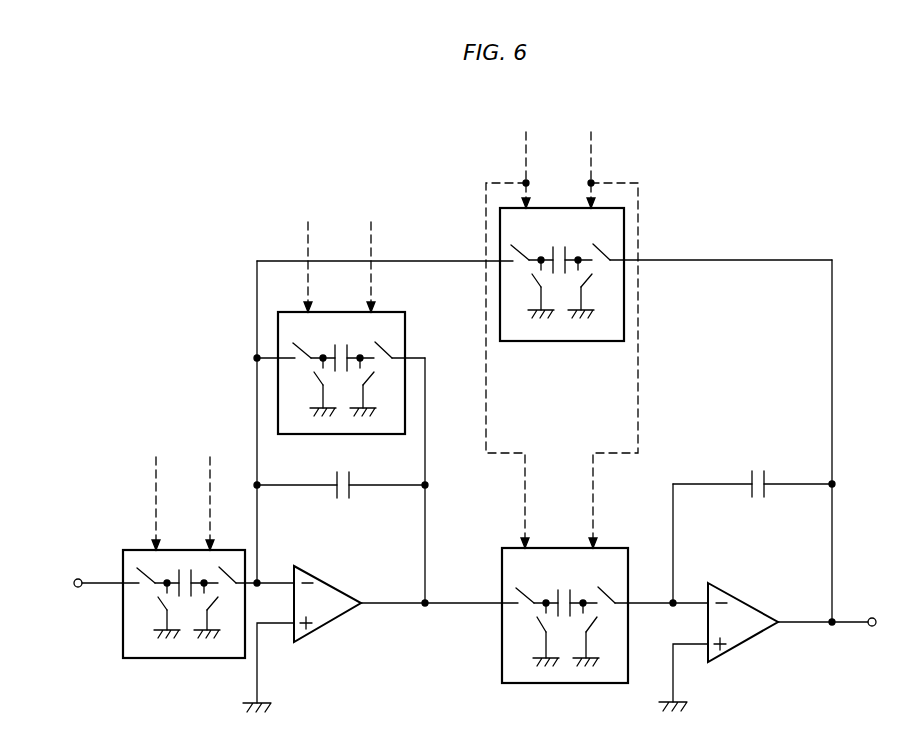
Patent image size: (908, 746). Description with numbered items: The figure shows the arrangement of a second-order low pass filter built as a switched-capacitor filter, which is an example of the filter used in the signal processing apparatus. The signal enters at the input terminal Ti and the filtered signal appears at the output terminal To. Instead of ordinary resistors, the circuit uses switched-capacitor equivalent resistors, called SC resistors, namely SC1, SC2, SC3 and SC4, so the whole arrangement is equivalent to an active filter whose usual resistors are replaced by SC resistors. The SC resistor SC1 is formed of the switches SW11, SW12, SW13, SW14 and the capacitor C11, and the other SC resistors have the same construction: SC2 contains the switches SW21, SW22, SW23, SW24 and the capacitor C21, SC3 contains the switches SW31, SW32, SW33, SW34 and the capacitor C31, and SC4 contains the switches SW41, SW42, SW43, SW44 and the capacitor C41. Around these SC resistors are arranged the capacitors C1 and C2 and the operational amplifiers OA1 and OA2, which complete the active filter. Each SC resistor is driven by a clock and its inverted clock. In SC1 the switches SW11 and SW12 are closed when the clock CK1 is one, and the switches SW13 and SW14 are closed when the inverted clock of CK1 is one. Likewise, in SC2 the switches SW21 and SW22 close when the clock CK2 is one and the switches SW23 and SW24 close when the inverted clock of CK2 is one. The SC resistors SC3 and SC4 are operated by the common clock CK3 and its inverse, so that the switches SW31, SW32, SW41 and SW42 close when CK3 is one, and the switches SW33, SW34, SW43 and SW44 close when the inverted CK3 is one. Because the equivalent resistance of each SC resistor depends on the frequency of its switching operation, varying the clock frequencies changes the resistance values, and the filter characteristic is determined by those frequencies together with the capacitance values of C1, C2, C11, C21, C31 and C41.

The input terminal Ti is at (95, 585).
The output terminal To is at (887, 624).
The clock CK1 is at (232, 426).
The clock CK2 is at (393, 193).
The clock CK3 is at (608, 108).
The SC resistor SC1 is at (191, 605).
The SC resistor SC2 is at (332, 374).
The SC resistor SC3 is at (544, 620).
The SC resistor SC4 is at (567, 277).
The switch SW11 is at (148, 568).
The switch SW12 is at (228, 567).
The switch SW13 is at (157, 605).
The switch SW14 is at (222, 612).
The switch SW21 is at (298, 345).
The switch SW22 is at (385, 343).
The switch SW23 is at (312, 380).
The switch SW24 is at (374, 376).
The switch SW31 is at (525, 590).
The switch SW32 is at (603, 587).
The switch SW33 is at (530, 628).
The switch SW34 is at (600, 636).
The switch SW41 is at (518, 245).
The switch SW42 is at (603, 243).
The switch SW43 is at (525, 280).
The switch SW44 is at (590, 287).
The capacitor C11 is at (185, 570).
The capacitor C21 is at (342, 345).
The capacitor C31 is at (563, 590).
The capacitor C41 is at (560, 240).
The capacitor C1 is at (345, 497).
The capacitor C2 is at (755, 470).
The operational amplifier OA1 is at (335, 617).
The operational amplifier OA2 is at (760, 635).